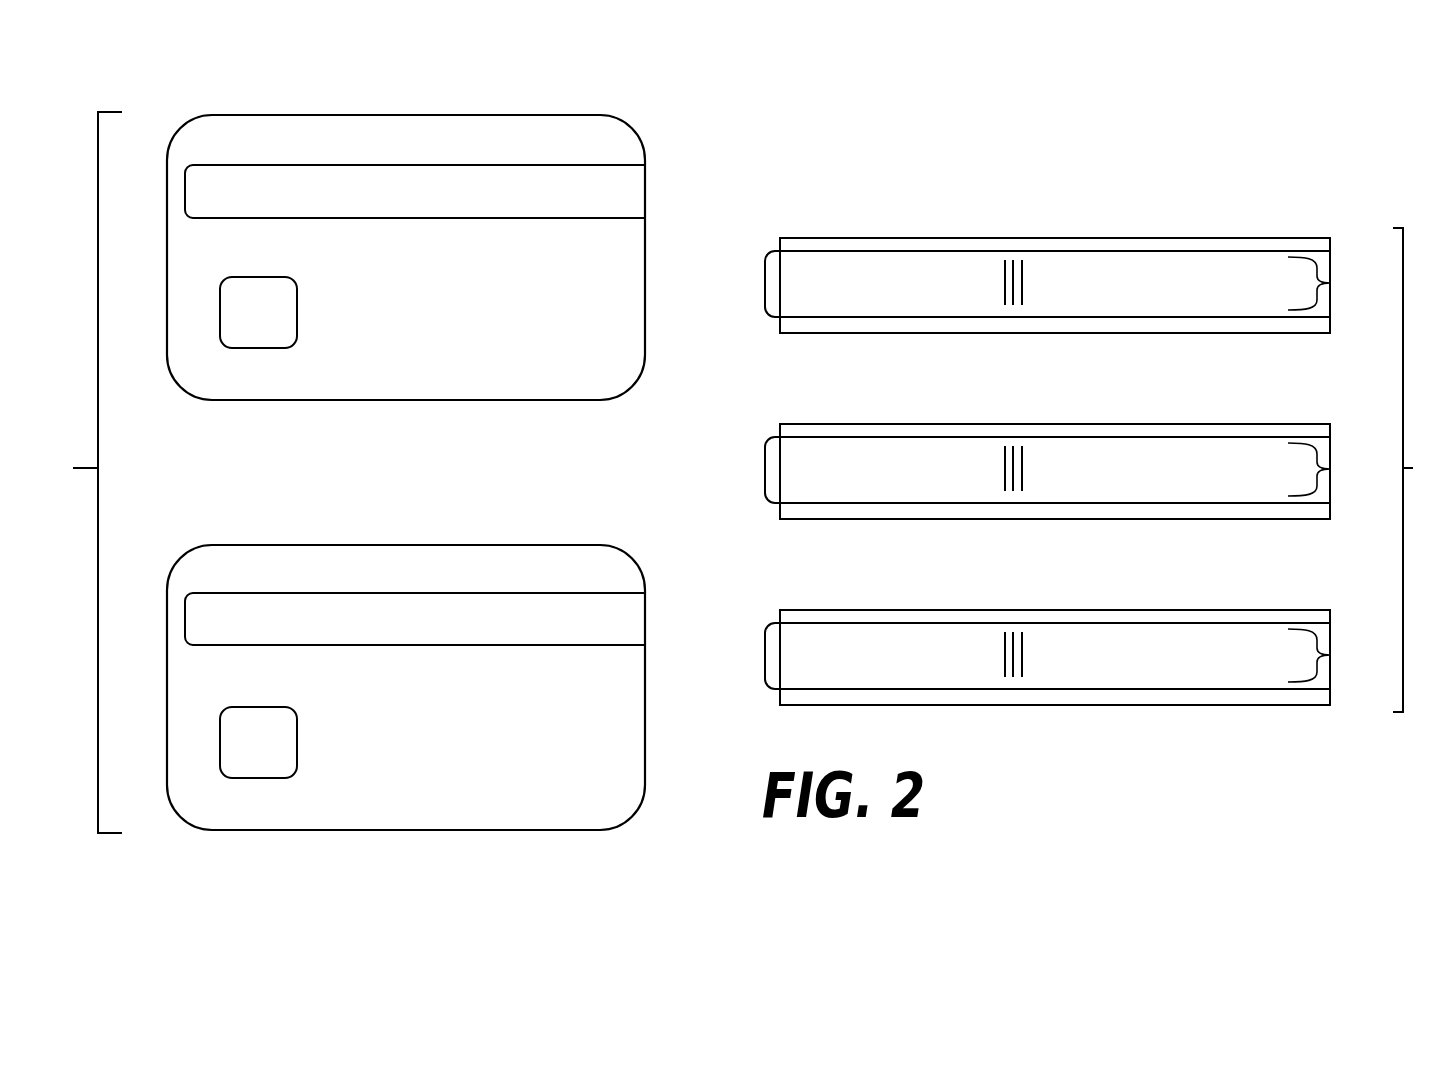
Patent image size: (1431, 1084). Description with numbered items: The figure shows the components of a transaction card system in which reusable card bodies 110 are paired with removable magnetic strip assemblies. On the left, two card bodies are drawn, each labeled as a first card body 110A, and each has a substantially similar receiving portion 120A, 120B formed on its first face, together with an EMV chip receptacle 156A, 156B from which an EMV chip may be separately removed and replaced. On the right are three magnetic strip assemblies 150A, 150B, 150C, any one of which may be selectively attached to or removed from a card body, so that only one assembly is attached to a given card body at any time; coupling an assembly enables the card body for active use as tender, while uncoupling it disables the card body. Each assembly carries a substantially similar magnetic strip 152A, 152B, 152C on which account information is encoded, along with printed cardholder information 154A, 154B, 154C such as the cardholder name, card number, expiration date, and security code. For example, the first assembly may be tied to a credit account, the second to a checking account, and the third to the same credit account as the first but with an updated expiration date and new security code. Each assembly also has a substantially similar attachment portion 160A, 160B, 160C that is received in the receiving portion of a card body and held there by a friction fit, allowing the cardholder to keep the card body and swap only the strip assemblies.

The card body 110 is at (81, 472).
The first card body 110A is at (327, 103).
The receiving portion 120A is at (634, 190).
The receiving portion 120B is at (634, 613).
The EMV chip receptacle 156A is at (278, 284).
The EMV chip receptacle 156B is at (278, 714).
The magnetic strip assembly 150A is at (1310, 220).
The magnetic strip assembly 150B is at (1310, 406).
The magnetic strip assembly 150C is at (1310, 592).
The magnetic strip 152A is at (760, 280).
The magnetic strip 152B is at (760, 466).
The magnetic strip 152C is at (760, 652).
The cardholder information 154A is at (1330, 283).
The cardholder information 154B is at (1330, 469).
The cardholder information 154C is at (1330, 655).
The attachment portion 160A is at (886, 233).
The attachment portion 160B is at (886, 419).
The attachment portion 160C is at (886, 605).